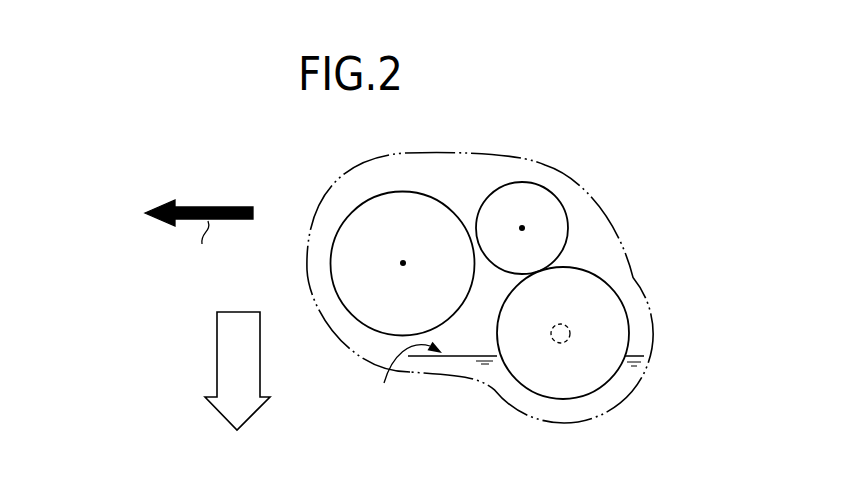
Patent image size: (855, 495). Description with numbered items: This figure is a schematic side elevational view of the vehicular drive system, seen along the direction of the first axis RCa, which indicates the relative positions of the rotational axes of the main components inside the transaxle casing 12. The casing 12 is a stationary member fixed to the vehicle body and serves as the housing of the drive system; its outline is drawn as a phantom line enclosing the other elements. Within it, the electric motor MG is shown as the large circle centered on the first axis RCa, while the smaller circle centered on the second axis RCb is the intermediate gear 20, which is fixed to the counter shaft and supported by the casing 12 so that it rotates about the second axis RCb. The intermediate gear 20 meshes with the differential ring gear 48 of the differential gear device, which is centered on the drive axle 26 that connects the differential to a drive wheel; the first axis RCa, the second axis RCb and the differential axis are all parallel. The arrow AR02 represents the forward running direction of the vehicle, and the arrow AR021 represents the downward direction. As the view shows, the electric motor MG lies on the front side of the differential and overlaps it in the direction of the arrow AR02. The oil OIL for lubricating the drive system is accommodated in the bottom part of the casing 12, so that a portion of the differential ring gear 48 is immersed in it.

The transaxle casing 12 is at (421, 153).
The intermediate gear 20 is at (547, 182).
The differential ring gear 48 is at (617, 293).
The drive axle 26 is at (569, 341).
The electric motor MG is at (363, 203).
The first axis RCa is at (402, 264).
The second axis RCb is at (522, 227).
The oil OIL is at (503, 375).
The arrow AR02 is at (238, 207).
The arrow AR021 is at (218, 381).